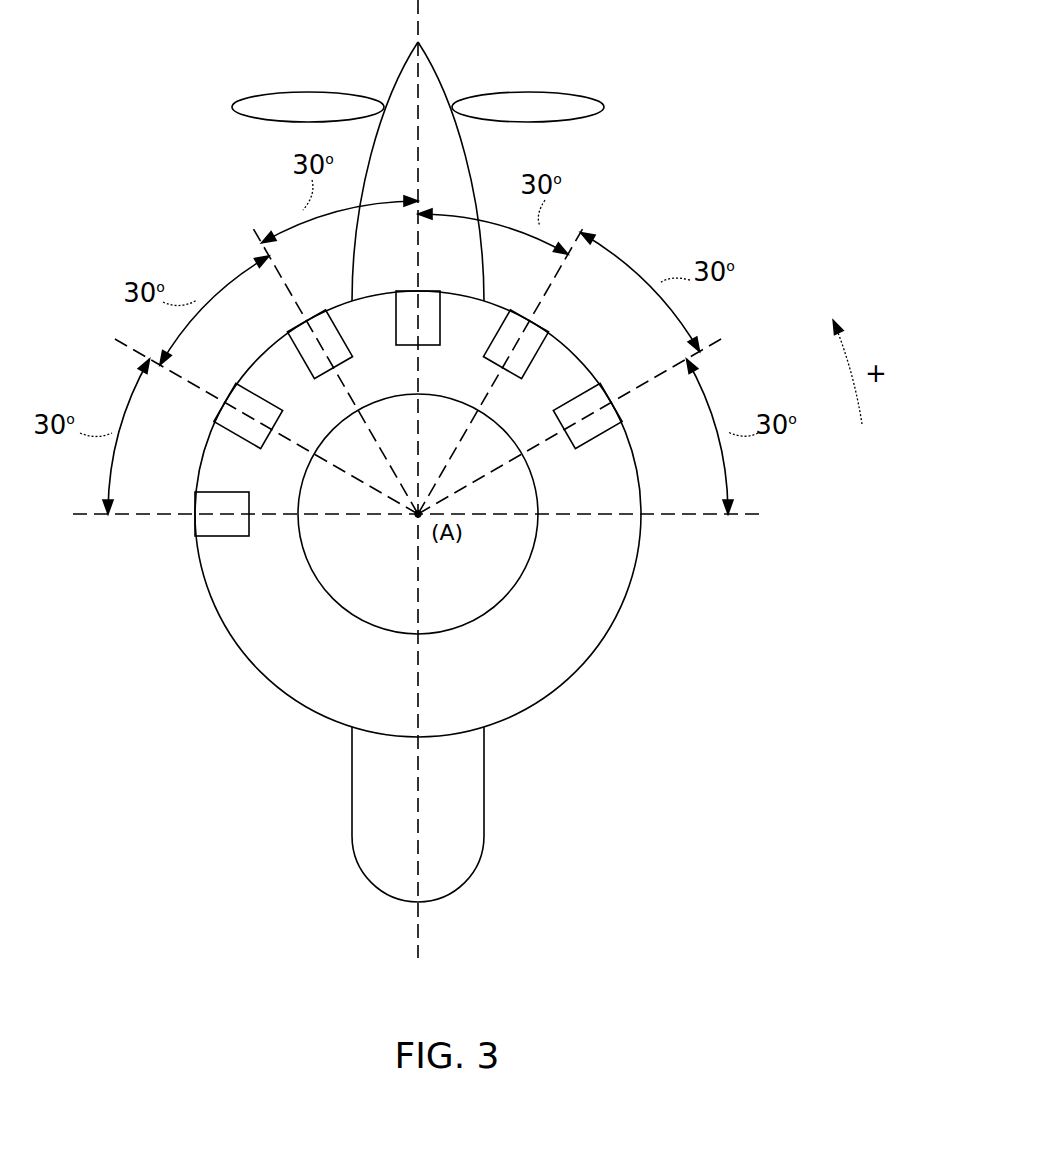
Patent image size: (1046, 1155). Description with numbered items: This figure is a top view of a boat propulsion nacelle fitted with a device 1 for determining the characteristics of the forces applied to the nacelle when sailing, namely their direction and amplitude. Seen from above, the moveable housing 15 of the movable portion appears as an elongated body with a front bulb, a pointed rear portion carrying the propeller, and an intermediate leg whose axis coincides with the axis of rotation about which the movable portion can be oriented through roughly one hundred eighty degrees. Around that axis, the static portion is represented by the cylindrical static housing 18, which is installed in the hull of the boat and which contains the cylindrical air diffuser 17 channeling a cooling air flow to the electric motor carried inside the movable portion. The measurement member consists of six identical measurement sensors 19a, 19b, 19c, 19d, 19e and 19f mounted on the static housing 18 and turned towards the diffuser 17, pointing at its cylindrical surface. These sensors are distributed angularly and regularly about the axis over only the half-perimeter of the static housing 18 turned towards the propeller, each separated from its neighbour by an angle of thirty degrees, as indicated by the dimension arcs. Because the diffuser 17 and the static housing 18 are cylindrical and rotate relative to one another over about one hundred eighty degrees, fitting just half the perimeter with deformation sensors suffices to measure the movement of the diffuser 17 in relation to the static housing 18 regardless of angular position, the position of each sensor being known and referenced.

The device for determining force characteristics 1 is at (702, 88).
The moveable housing 15 is at (487, 808).
The air diffuser 17 is at (500, 603).
The static housing 18 is at (256, 672).
The measurement sensor 19a is at (606, 393).
The measurement sensor 19b is at (524, 312).
The measurement sensor 19c is at (412, 290).
The measurement sensor 19d is at (323, 313).
The measurement sensor 19e is at (232, 388).
The measurement sensor 19f is at (193, 493).